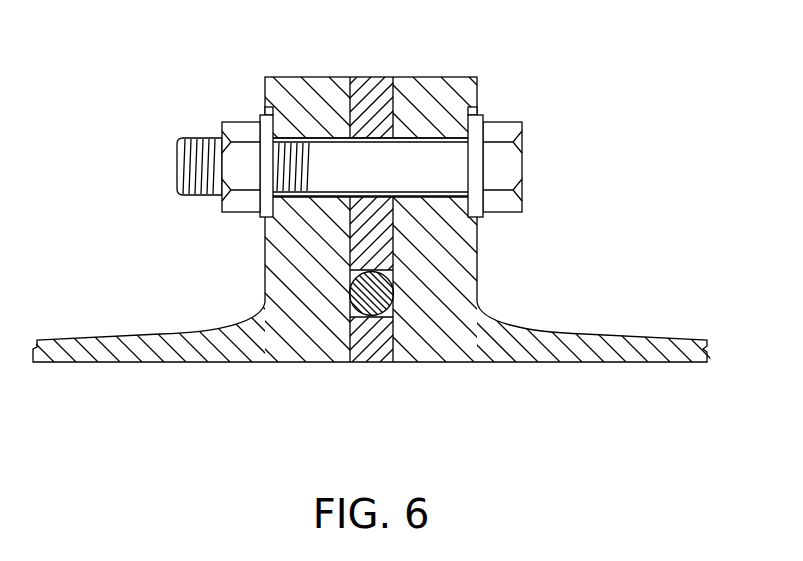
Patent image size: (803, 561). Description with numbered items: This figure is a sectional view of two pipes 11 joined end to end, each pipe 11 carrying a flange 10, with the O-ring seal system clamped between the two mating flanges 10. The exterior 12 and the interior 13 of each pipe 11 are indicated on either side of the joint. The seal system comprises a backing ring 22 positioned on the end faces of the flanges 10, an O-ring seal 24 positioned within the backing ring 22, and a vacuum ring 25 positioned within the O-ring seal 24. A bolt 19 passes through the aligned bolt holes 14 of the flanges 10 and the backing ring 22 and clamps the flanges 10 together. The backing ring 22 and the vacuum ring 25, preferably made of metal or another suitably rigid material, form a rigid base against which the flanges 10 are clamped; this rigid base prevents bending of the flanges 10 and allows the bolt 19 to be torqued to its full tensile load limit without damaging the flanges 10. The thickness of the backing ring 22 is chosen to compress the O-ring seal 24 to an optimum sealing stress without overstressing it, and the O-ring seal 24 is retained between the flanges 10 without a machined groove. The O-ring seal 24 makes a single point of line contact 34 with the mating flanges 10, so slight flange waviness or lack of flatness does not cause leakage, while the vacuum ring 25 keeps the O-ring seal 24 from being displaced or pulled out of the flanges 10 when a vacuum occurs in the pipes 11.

The flange 10 is at (297, 251).
The pipe 11 is at (184, 357).
The exterior 12 is at (110, 308).
The interior 13 is at (112, 384).
The bolt hole 14 is at (295, 138).
The bolt 19 is at (323, 157).
The backing ring 22 is at (372, 90).
The O-ring seal 24 is at (360, 294).
The vacuum ring 25 is at (375, 343).
The single point of line contact 34 is at (398, 295).